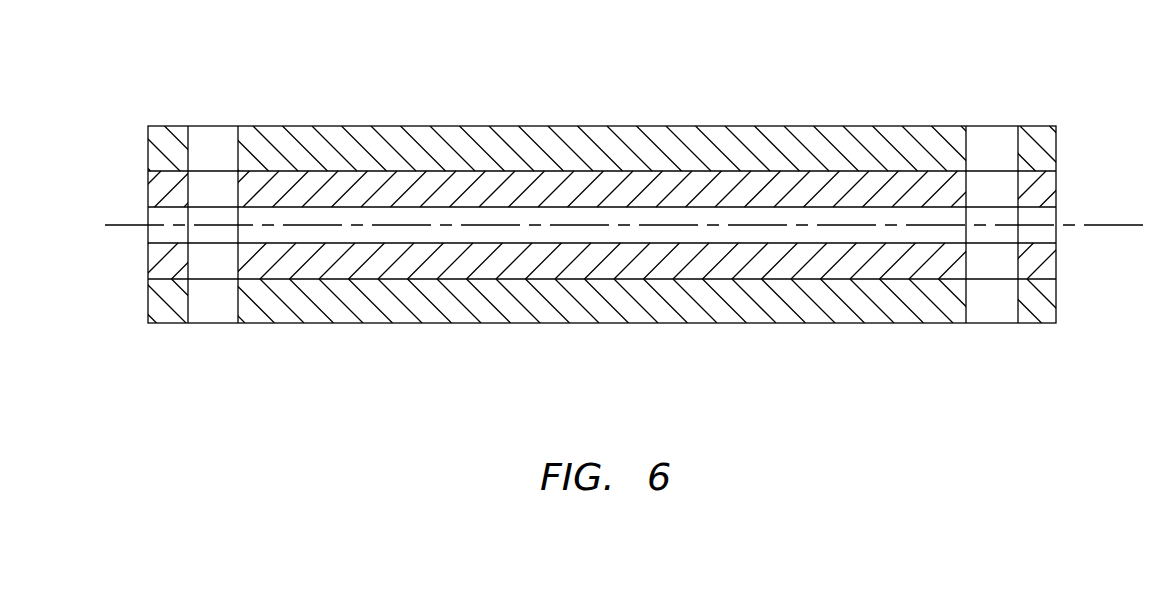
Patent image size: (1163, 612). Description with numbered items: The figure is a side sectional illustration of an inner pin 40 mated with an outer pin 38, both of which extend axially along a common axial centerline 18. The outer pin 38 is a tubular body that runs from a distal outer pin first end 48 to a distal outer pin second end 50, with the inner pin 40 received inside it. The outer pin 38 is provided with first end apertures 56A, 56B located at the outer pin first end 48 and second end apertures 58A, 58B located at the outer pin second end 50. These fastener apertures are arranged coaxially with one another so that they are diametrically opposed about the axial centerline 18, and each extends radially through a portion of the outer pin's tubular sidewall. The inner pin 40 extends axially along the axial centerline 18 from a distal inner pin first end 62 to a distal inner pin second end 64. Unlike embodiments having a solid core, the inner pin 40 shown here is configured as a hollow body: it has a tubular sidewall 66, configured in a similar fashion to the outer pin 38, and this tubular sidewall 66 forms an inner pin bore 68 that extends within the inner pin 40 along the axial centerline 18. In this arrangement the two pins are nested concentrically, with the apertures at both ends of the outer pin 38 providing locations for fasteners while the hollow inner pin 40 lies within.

The axial centerline 18 is at (1143, 222).
The outer pin 38 is at (137, 141).
The inner pin 40 is at (137, 190).
The outer pin first end 48 is at (148, 300).
The outer pin second end 50 is at (1056, 302).
The first end aperture 56A is at (228, 135).
The first end aperture 56B is at (223, 305).
The second end aperture 58A is at (1005, 137).
The second end aperture 58B is at (1000, 312).
The inner pin first end 62 is at (148, 255).
The inner pin second end 64 is at (1056, 257).
The tubular sidewall 66 is at (402, 265).
The inner pin bore 68 is at (445, 232).